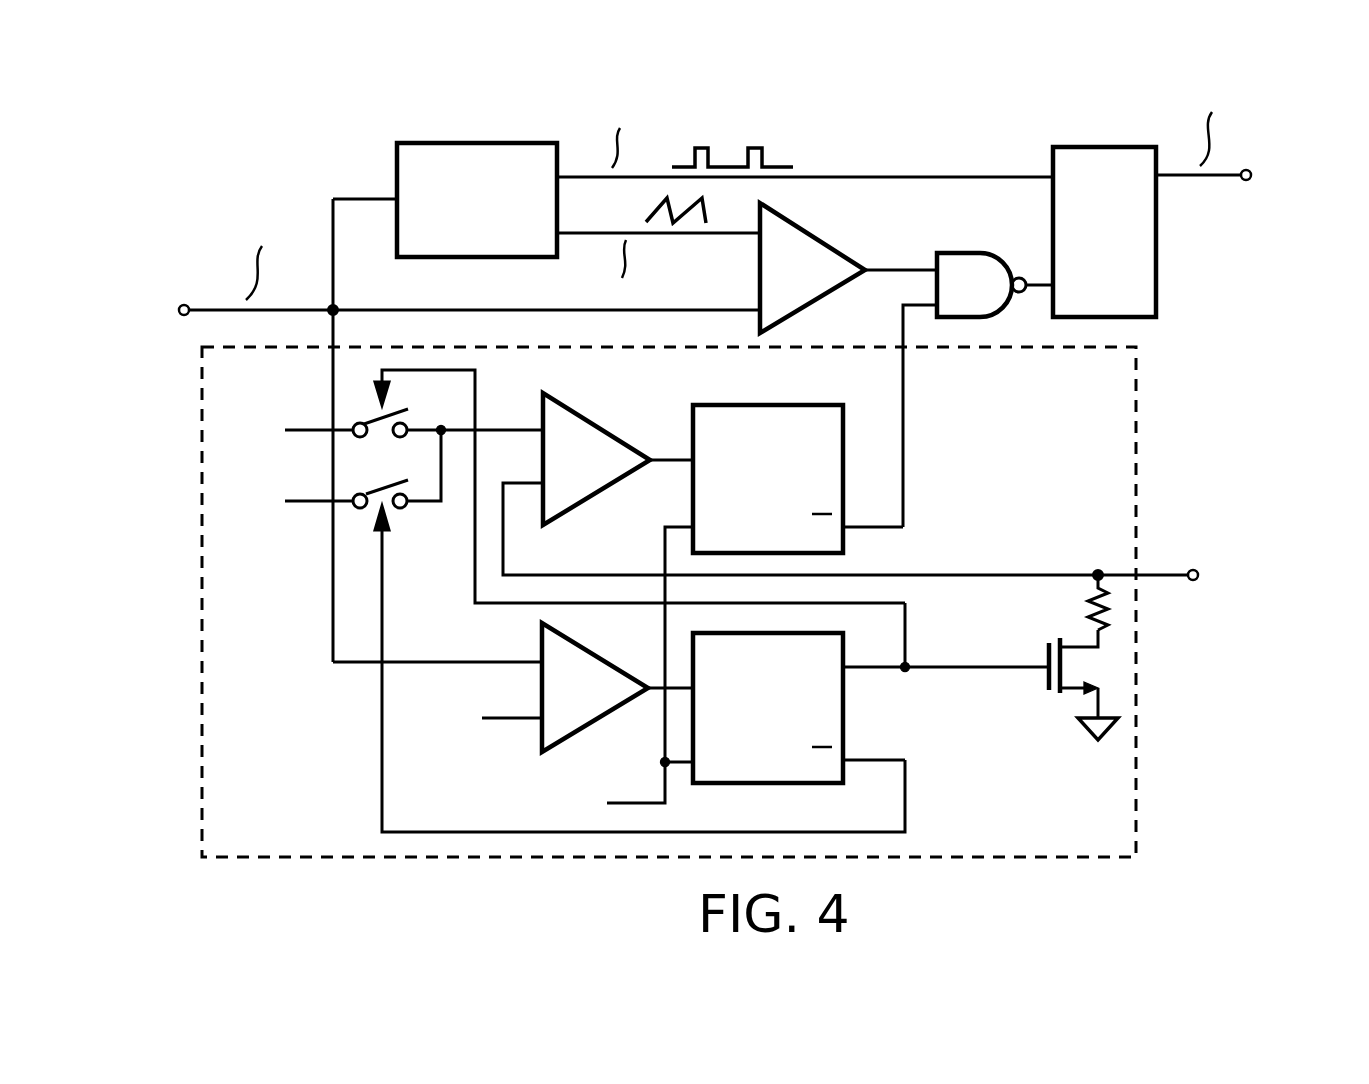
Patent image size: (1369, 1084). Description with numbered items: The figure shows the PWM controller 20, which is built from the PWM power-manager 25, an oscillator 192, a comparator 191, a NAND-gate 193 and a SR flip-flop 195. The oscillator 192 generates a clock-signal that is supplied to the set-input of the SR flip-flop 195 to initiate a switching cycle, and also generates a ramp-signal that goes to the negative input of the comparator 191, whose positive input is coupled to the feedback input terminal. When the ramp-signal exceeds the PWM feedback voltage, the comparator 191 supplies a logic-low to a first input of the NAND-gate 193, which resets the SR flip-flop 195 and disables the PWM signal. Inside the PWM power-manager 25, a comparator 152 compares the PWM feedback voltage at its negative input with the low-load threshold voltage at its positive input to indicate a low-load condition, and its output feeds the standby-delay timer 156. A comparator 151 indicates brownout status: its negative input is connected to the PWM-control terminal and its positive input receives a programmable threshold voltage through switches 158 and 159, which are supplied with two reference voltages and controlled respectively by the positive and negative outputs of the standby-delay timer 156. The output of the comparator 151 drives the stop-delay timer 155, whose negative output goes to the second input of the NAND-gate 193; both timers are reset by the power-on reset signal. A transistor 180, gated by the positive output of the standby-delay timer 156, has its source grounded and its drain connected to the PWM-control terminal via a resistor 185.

The PWM controller 20 is at (1367, 118).
The PWM power-manager 25 is at (1138, 384).
The comparator 151 is at (600, 420).
The comparator 152 is at (535, 755).
The stop-delay timer 155 is at (848, 472).
The standby-delay timer 156 is at (855, 718).
The switch 158 is at (355, 417).
The switch 159 is at (352, 519).
The transistor 180 is at (1053, 703).
The resistor 185 is at (1080, 608).
The comparator 191 is at (840, 244).
The oscillator 192 is at (502, 143).
The NAND-gate 193 is at (963, 253).
The SR flip-flop 195 is at (1086, 147).